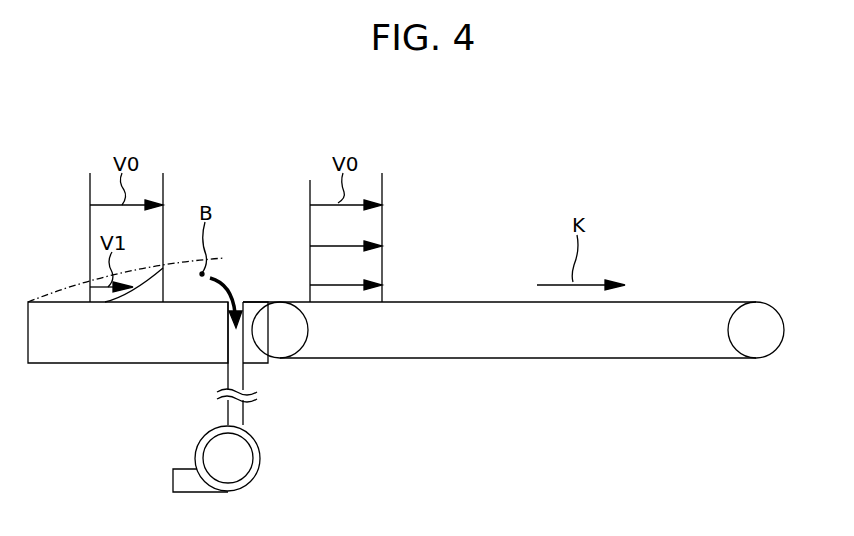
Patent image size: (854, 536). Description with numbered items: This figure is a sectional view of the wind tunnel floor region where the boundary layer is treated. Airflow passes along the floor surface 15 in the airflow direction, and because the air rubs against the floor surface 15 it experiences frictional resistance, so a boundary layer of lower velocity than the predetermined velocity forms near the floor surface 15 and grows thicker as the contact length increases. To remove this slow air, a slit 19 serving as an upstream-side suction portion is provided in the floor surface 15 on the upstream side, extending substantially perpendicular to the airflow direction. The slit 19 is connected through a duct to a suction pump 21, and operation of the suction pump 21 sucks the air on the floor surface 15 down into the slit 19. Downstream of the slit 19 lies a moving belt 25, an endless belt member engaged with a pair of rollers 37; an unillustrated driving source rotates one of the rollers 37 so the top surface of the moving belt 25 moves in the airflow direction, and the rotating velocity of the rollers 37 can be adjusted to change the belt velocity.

The floor surface 15 is at (197, 302).
The slit 19 is at (236, 300).
The suction pump 21 is at (260, 458).
The moving belt 25 is at (722, 302).
The roller 37 is at (297, 338).